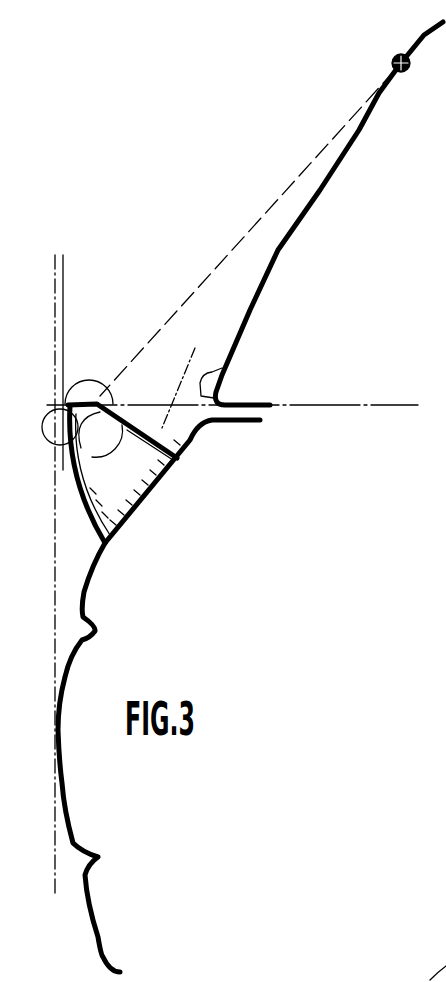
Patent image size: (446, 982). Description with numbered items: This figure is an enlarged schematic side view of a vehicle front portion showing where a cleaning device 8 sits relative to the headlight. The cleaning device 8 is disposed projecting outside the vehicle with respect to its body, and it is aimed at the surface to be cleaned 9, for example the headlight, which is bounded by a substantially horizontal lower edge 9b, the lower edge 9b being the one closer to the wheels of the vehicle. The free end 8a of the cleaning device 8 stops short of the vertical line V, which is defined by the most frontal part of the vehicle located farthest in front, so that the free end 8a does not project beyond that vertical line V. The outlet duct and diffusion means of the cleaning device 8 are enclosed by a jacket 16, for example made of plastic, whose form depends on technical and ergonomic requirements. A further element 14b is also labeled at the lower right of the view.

The cleaning device 8 is at (158, 437).
The free end of the cleaning device 8a is at (89, 392).
The surface to be cleaned 9 is at (267, 291).
The lower edge 9b is at (226, 368).
The jacket 16 is at (135, 482).
The vertical line V is at (55, 538).
The frame part 14b is at (445, 949).